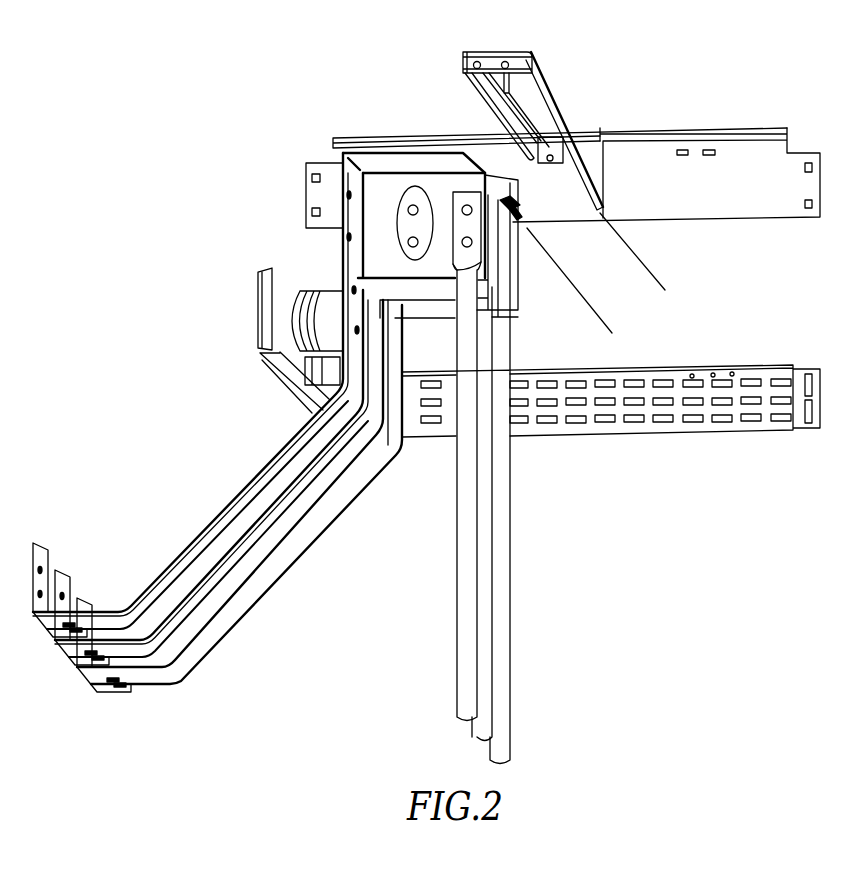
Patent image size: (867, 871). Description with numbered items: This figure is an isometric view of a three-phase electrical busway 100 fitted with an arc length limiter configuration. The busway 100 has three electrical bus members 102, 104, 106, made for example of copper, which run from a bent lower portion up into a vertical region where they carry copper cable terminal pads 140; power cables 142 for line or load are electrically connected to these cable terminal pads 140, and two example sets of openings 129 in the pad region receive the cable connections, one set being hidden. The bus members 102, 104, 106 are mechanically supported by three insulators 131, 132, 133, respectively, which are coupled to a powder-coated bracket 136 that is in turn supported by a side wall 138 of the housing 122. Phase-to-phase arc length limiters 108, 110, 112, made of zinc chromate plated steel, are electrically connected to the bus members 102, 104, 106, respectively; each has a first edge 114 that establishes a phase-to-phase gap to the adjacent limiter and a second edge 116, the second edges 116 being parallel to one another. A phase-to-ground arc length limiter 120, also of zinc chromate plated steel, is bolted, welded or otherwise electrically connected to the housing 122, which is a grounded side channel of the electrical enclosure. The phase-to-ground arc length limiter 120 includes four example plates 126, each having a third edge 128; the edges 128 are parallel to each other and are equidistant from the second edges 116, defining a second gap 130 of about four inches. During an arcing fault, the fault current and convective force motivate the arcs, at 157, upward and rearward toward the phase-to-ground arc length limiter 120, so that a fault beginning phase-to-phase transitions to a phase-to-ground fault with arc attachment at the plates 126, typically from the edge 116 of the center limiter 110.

The electrical busway 100 is at (426, 400).
The electrical bus member 102 is at (301, 562).
The electrical bus member 104 is at (248, 567).
The electrical bus member 106 is at (199, 565).
The phase-to-phase arc length limiter 108 is at (605, 215).
The phase-to-phase arc length limiter 110 is at (508, 187).
The phase-to-phase arc length limiter 112 is at (481, 155).
The first edge 114 is at (523, 222).
The second edge 116 is at (535, 213).
The phase-to-ground arc length limiter 120 is at (481, 52).
The housing 122 is at (751, 214).
The plates 126 is at (522, 115).
The third edge 128 is at (515, 150).
The sets of openings 129 is at (425, 195).
The second gap 130 is at (655, 284).
The insulator 131 is at (327, 388).
The insulator 132 is at (330, 363).
The insulator 133 is at (312, 308).
The bracket 136 is at (259, 274).
The side wall 138 is at (767, 418).
The cable terminal pads 140 is at (432, 310).
The power cables 142 is at (507, 597).
The arc motion toward phase-to-ground limiter 157 is at (492, 140).